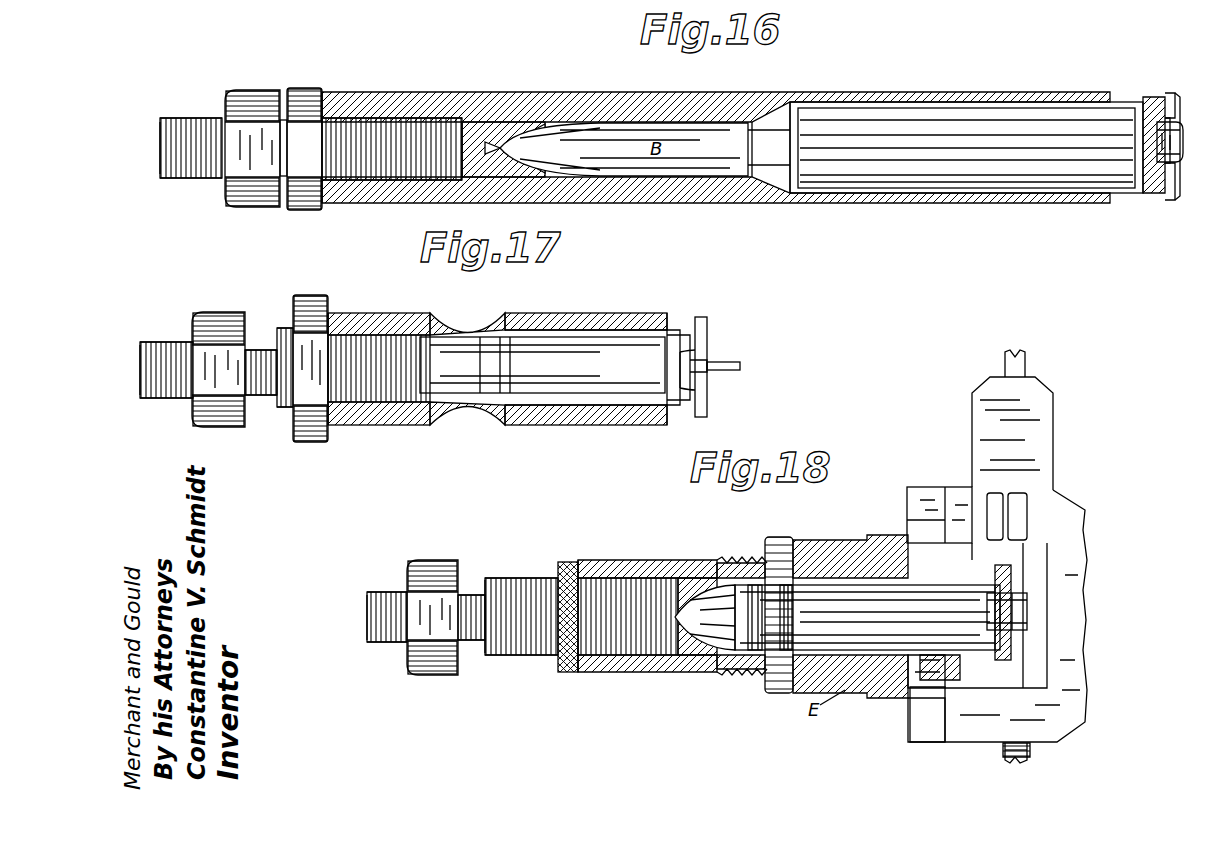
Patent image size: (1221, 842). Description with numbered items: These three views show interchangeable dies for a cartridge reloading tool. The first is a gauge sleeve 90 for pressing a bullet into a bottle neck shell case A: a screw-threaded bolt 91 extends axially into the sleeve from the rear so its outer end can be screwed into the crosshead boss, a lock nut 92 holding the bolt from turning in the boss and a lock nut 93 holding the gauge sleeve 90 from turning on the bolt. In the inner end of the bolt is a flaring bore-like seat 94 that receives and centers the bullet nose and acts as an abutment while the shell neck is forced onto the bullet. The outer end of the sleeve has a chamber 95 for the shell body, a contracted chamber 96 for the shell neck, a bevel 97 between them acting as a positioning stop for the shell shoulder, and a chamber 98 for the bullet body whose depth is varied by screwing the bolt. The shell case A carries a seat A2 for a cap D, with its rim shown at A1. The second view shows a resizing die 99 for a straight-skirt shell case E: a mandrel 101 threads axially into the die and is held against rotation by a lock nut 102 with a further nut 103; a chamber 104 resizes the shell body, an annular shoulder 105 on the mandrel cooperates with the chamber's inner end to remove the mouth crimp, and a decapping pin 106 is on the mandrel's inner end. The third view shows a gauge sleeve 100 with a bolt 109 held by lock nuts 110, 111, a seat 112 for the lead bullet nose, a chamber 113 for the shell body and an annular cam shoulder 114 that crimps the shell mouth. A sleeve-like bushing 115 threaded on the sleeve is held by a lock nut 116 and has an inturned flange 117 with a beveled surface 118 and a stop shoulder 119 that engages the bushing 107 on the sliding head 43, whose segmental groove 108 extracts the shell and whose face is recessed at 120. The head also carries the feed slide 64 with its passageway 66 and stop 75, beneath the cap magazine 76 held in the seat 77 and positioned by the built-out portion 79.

In FIG. 16, the gauge sleeve 90 is at (708, 92).
In FIG. 16, the screw-threaded bolt 91 is at (203, 118).
In FIG. 16, the lock nut 92 is at (258, 90).
In FIG. 16, the lock nut 93 is at (306, 90).
In FIG. 16, the bore-like seat 94 is at (503, 140).
In FIG. 16, the chamber 95 is at (925, 196).
In FIG. 16, the contracted chamber 96 is at (665, 180).
In FIG. 16, the beveled positioning stop 97 is at (770, 190).
In FIG. 16, the chamber 98 is at (557, 126).
In FIG. 16, the shell case A is at (985, 180).
In FIG. 16, the cartridge flange A1 is at (1163, 192).
In FIG. 16, the cap seat A2 is at (1178, 192).
In FIG. 16, the cap D is at (1184, 142).
In FIG. 17, the resizing die 99 is at (568, 313).
In FIG. 17, the mandrel 101 is at (458, 392).
In FIG. 17, the lock nut 102 is at (232, 428).
In FIG. 17, the lock nut 103 is at (316, 443).
In FIG. 17, the chamber 104 is at (668, 325).
In FIG. 17, the annular shoulder 105 is at (512, 360).
In FIG. 17, the decapping pin 106 is at (740, 362).
In FIG. 17, the shell case E is at (708, 330).
In FIG. 18, the gauge sleeve 100 is at (655, 545).
In FIG. 18, the bushing 107 is at (1020, 575).
In FIG. 18, the segmental groove 108 is at (930, 604).
In FIG. 18, the bolt 109 is at (530, 657).
In FIG. 18, the lock nut 110 is at (445, 676).
In FIG. 18, the lock nut 111 is at (568, 674).
In FIG. 18, the seat 112 is at (693, 656).
In FIG. 18, the chamber 113 is at (765, 655).
In FIG. 18, the annular cam shoulder 114 is at (742, 563).
In FIG. 18, the sleeve-like bushing 115 is at (830, 555).
In FIG. 18, the lock nut 116 is at (778, 540).
In FIG. 18, the inturned flange 117 is at (920, 690).
In FIG. 18, the beveled surface 118 is at (945, 672).
In FIG. 18, the stop shoulder 119 is at (885, 590).
In FIG. 18, the recess 120 is at (945, 700).
In FIG. 18, the sliding head 43 is at (1088, 718).
In FIG. 18, the feed slide 64 is at (1027, 362).
In FIG. 18, the passageway 66 is at (1030, 617).
In FIG. 18, the stop 75 is at (1003, 750).
In FIG. 18, the magazine 76 is at (1028, 515).
In FIG. 18, the sleeve-like seat 77 is at (985, 478).
In FIG. 18, the built-out portion 79 is at (945, 505).